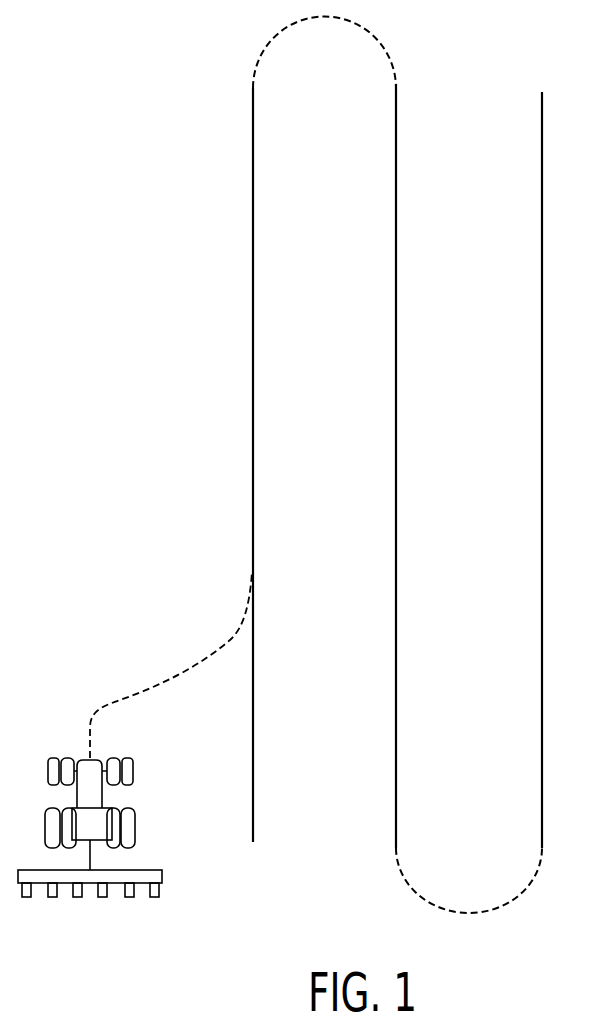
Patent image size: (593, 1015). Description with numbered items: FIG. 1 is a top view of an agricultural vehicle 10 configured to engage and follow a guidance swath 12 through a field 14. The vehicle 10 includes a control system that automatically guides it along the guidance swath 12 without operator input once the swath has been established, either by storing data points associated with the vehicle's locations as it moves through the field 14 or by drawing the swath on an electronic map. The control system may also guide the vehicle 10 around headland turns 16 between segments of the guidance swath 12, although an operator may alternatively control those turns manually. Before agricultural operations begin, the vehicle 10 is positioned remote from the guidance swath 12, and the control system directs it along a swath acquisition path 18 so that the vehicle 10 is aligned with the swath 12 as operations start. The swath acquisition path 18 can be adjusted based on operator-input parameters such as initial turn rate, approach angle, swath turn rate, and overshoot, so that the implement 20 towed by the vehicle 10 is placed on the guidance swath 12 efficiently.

The agricultural vehicle 10 is at (102, 797).
The guidance swath 12 is at (253, 362).
The field 14 is at (173, 274).
The headland turns 16 is at (378, 42).
The swath acquisition path 18 is at (170, 678).
The implement 20 is at (148, 875).